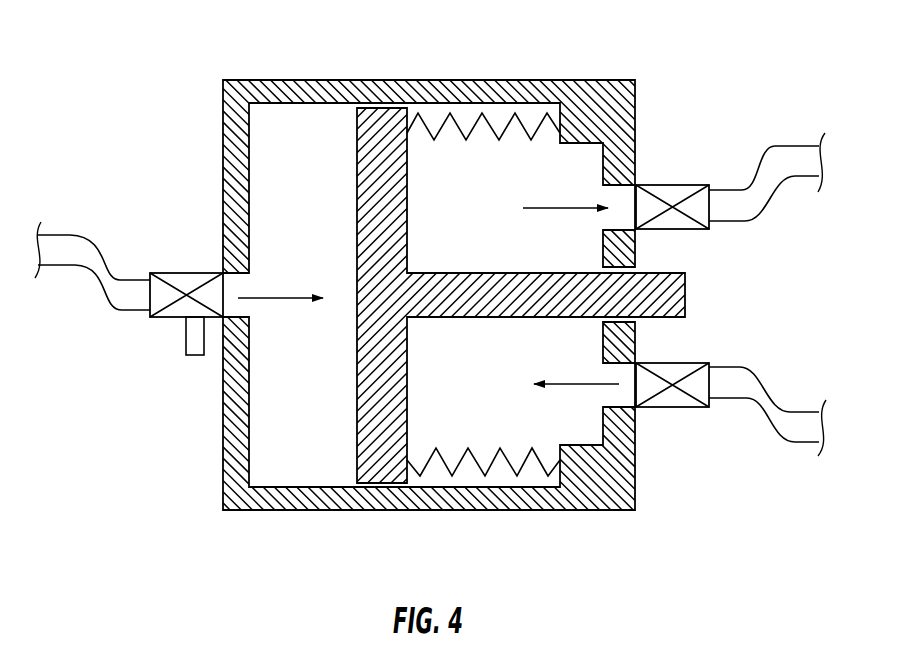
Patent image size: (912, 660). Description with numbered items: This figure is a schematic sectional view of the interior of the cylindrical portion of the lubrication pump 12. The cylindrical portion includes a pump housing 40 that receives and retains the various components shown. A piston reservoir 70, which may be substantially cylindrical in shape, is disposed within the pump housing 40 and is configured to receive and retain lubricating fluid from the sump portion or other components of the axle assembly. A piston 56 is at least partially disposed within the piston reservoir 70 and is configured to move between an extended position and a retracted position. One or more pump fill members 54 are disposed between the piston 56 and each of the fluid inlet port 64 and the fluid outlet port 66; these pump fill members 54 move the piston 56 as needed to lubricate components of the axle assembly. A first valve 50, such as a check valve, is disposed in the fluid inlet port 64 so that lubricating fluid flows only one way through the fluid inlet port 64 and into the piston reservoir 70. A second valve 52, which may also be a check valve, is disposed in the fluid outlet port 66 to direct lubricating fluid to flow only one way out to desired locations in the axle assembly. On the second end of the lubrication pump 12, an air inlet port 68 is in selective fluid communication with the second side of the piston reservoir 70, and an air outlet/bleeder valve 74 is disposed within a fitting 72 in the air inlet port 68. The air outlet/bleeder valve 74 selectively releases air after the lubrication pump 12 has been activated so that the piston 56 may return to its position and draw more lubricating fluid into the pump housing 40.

The lubrication pump 12 is at (230, 41).
The pump housing 40 is at (335, 80).
The first valve 50 is at (670, 407).
The second valve 52 is at (670, 185).
The pump fill members 54 is at (472, 125).
The piston 56 is at (357, 460).
The fluid inlet port 64 is at (580, 383).
The fluid outlet port 66 is at (565, 207).
The air inlet port 68 is at (278, 297).
The piston reservoir 70 is at (516, 122).
The fitting 72 is at (174, 272).
The air outlet/bleeder valve 74 is at (184, 344).